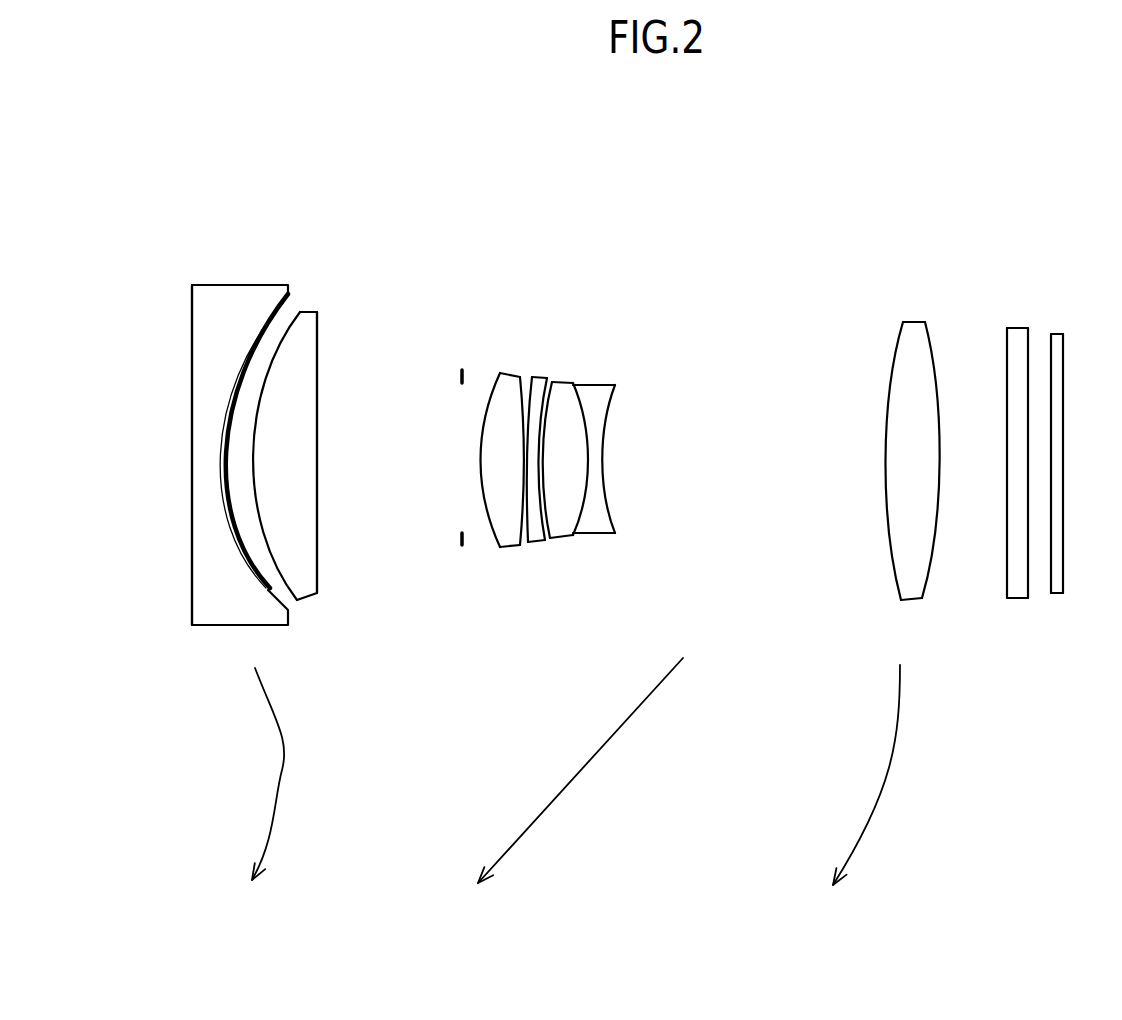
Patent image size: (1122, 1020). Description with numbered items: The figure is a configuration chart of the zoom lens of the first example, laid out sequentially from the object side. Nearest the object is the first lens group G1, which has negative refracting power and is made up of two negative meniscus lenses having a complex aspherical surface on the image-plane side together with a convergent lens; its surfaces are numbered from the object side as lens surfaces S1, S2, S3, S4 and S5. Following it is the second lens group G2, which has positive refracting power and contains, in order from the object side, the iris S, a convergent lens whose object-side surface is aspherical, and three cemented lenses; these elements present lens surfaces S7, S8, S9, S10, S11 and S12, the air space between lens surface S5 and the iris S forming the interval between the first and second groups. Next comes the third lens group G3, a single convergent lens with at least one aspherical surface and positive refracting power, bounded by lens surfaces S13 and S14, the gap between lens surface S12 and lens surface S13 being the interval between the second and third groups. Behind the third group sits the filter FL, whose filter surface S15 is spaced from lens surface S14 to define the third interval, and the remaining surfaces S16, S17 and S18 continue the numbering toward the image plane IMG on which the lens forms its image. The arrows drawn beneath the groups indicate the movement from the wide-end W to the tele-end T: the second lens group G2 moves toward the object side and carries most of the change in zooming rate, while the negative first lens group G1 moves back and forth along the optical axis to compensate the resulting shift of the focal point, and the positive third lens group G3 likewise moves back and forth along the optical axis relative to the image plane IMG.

The first lens group G1 is at (342, 216).
The second lens group G2 is at (628, 254).
The third lens group G3 is at (938, 287).
The iris S is at (460, 370).
The filter FL is at (1018, 328).
The image plane IMG is at (1057, 333).
The wide-end W is at (232, 767).
The tele-end T is at (538, 772).
The first lens surface S1 is at (228, 298).
The second lens surface S2 is at (272, 328).
The third lens surface S3 is at (262, 405).
The fourth lens surface S4 is at (268, 382).
The lens surface S5 is at (318, 475).
The seventh lens surface S7 is at (480, 460).
The eighth lens surface S8 is at (521, 377).
The ninth lens surface S9 is at (530, 385).
The tenth lens surface S10 is at (547, 412).
The eleventh lens surface S11 is at (588, 430).
The lens surface S12 is at (603, 472).
The lens surface S13 is at (895, 358).
The lens surface S14 is at (932, 358).
The filter surface S15 is at (1008, 405).
The sixteenth surface (filter rear) S16 is at (1030, 452).
The seventeenth surface (image plane front) S17 is at (1048, 490).
The eighteenth surface (image plane rear) S18 is at (1064, 530).